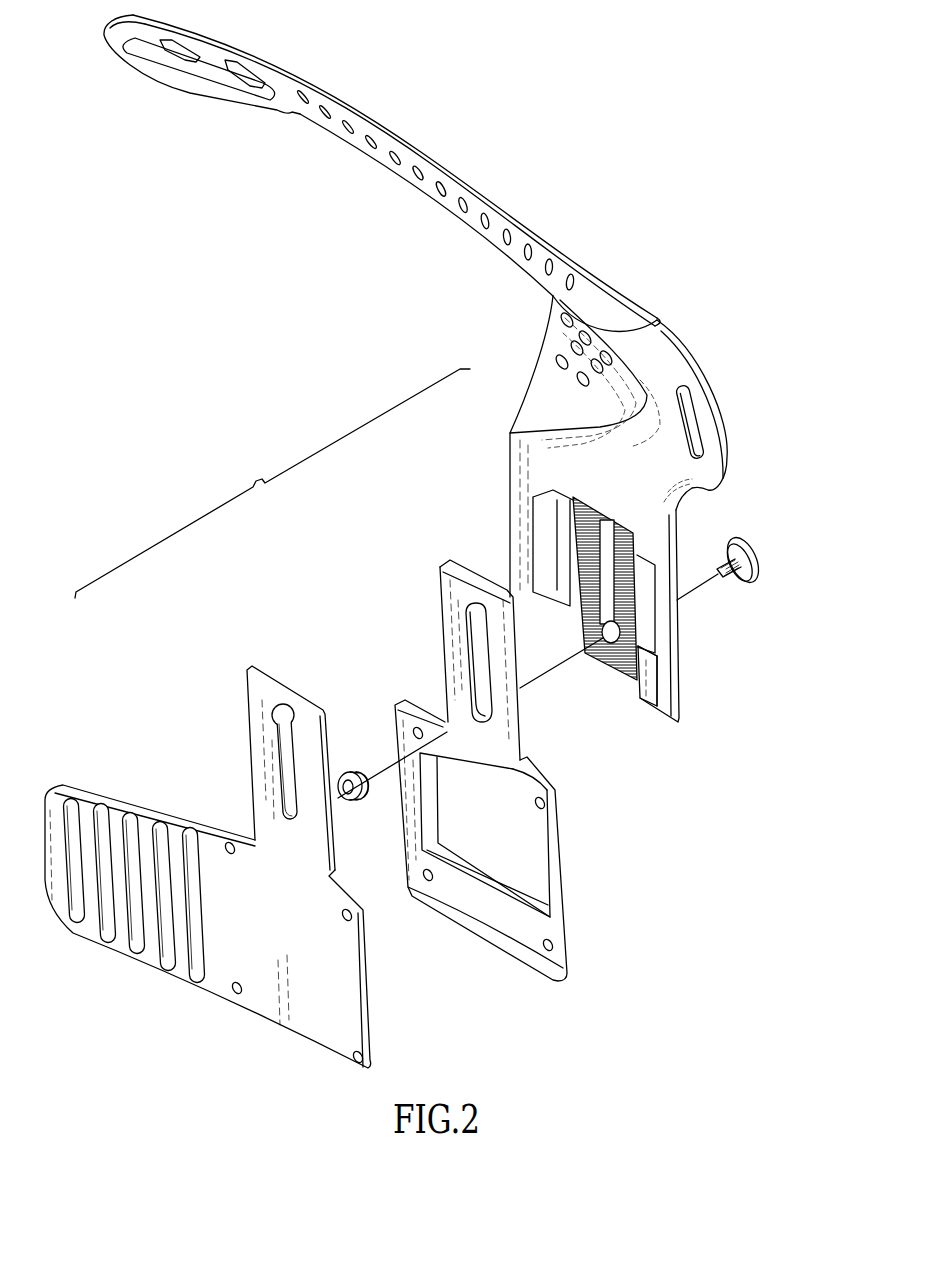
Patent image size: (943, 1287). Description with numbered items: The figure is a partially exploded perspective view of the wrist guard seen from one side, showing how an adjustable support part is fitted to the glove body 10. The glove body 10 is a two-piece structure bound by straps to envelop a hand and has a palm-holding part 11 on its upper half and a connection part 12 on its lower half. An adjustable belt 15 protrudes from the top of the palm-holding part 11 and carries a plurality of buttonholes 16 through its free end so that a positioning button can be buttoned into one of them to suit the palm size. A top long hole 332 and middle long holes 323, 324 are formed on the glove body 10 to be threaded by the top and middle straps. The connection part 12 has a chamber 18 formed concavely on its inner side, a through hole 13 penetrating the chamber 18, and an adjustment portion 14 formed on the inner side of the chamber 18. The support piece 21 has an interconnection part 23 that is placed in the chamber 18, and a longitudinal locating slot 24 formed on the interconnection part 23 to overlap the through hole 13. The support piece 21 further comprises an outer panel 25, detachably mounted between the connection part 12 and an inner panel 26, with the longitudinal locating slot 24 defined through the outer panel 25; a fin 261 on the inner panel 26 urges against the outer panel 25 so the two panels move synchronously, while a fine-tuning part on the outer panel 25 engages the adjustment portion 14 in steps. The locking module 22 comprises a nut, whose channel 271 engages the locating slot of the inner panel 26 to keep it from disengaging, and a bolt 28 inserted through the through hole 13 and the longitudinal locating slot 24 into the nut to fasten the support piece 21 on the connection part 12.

The glove body 10 is at (676, 322).
The palm-holding part 11 is at (658, 368).
The connection part 12 is at (660, 522).
The through hole 13 is at (655, 662).
The adjustment portion 14 is at (588, 504).
The adjustable belt 15 is at (417, 157).
The buttonholes 16 is at (250, 72).
The chamber 18 is at (560, 603).
The support piece 21 is at (434, 556).
The locking module 22 is at (742, 592).
The interconnection part 23 is at (455, 615).
The longitudinal locating slot 24 is at (483, 659).
The outer panel 25 is at (553, 922).
The inner panel 26 is at (345, 1000).
The bolt 28 is at (738, 537).
The fin 261 is at (325, 710).
The channel 271 is at (362, 797).
The middle long hole 323 is at (543, 513).
The middle long hole 324 is at (652, 613).
The top long hole 332 is at (690, 418).